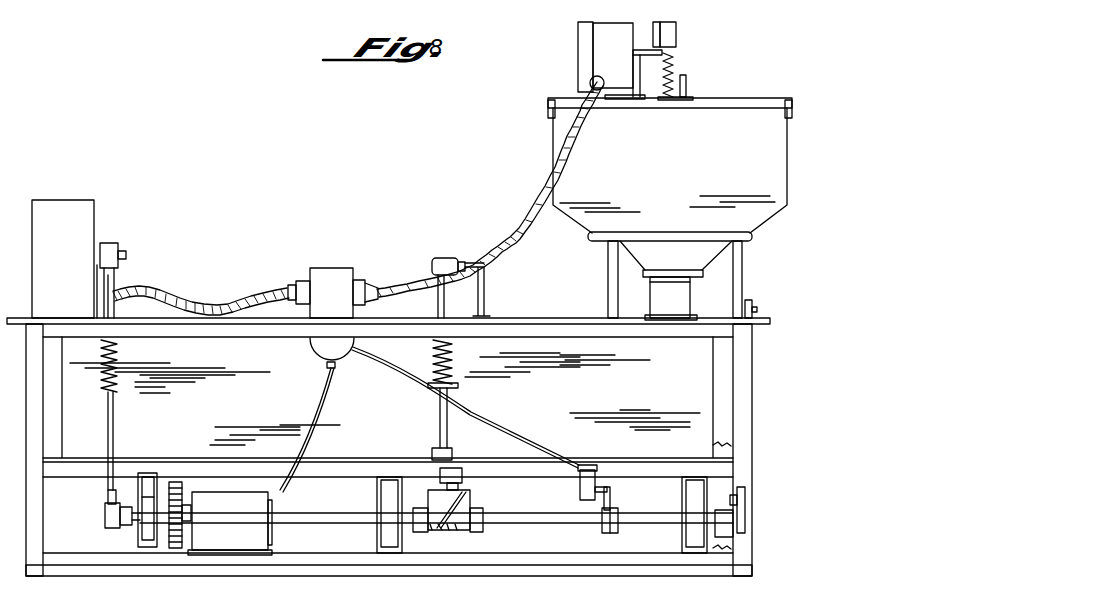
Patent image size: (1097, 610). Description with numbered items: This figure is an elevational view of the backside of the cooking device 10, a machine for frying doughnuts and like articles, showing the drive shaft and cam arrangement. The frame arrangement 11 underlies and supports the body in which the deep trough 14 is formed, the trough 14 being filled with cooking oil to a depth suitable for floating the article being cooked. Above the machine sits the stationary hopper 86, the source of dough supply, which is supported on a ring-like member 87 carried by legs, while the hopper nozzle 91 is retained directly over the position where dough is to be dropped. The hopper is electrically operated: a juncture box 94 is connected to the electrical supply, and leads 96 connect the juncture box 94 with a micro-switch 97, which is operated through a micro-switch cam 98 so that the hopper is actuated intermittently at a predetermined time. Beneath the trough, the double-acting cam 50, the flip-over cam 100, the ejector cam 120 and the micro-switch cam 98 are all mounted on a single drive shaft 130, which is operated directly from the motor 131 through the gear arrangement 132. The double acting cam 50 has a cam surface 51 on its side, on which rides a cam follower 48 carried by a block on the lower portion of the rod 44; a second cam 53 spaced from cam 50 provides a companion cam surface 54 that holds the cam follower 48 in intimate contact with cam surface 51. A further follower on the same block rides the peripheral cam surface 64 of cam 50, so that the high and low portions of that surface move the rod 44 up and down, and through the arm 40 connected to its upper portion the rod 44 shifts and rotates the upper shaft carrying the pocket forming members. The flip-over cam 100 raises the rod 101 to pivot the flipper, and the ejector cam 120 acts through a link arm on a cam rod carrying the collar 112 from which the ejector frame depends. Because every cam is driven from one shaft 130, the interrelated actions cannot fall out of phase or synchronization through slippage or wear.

The cooking device 10 is at (211, 232).
The frame arrangement 11 is at (30, 434).
The trough 14 is at (705, 386).
The arm 40 is at (466, 248).
The rod 44 is at (440, 435).
The cam follower 48 is at (462, 496).
The double acting cam 50 is at (440, 531).
The cam surface 51 is at (449, 531).
The second cam 53 is at (467, 534).
The companion cam surface 54 is at (456, 531).
The peripheral cam surface 64 is at (431, 531).
The hopper 86 is at (547, 140).
The ring-like member 87 is at (592, 240).
The hopper nozzle 91 is at (658, 300).
The juncture box 94 is at (333, 270).
The leads 96 is at (385, 399).
The micro-switch 97 is at (580, 497).
The micro-switch cam 98 is at (607, 536).
The flip-over cam 100 is at (106, 526).
The rod 101 is at (106, 486).
The collar 112 is at (750, 308).
The ejector cam 120 is at (730, 538).
The drive shaft 130 is at (321, 516).
The motor 131 is at (243, 546).
The gear arrangement 132 is at (177, 548).